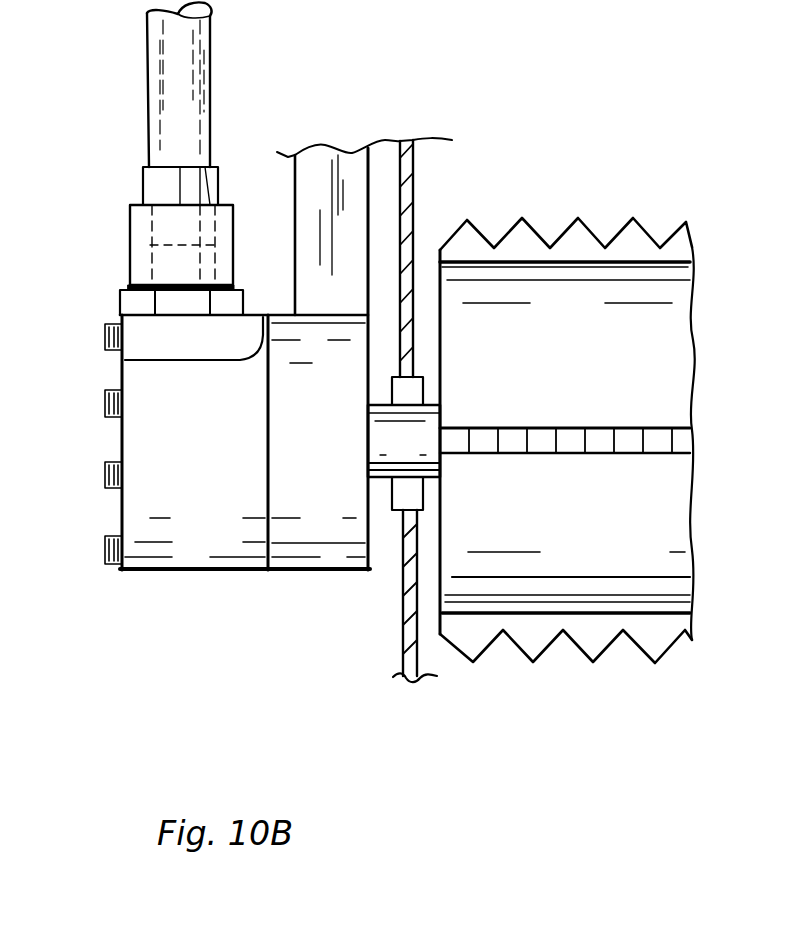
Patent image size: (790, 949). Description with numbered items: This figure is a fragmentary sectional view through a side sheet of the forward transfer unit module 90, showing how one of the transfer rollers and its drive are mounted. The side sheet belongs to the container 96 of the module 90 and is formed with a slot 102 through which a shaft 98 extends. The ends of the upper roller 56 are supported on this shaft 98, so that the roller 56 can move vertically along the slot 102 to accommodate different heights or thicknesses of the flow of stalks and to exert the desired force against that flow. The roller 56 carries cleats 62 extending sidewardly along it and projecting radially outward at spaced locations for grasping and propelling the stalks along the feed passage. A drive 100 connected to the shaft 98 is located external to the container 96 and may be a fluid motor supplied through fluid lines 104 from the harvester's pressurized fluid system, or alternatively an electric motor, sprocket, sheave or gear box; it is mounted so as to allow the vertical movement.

The upper roller 56 is at (655, 663).
The cleats 62 is at (580, 220).
The forward transfer unit module 90 is at (321, 411).
The container 96 is at (400, 625).
The shaft 98 is at (440, 466).
The drive 100 is at (122, 437).
The slots 102 is at (425, 404).
The fluid lines 104 is at (210, 63).